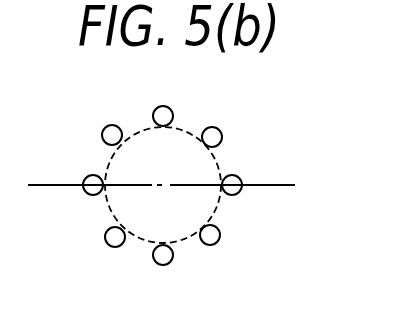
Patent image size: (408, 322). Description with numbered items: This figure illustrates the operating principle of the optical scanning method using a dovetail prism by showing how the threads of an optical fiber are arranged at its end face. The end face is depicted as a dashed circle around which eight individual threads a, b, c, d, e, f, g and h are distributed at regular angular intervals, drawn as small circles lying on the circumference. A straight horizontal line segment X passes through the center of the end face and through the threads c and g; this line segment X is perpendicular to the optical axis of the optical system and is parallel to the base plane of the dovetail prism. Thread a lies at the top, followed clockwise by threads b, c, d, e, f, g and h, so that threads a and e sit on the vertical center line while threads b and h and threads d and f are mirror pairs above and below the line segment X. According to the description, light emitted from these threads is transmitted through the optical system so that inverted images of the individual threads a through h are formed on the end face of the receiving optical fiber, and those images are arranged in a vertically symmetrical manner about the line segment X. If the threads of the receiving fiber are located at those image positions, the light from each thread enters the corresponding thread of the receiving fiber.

The thread a is at (166, 106).
The thread b is at (214, 127).
The thread c is at (242, 182).
The thread d is at (220, 237).
The thread e is at (166, 265).
The thread f is at (106, 244).
The thread g is at (85, 191).
The thread h is at (102, 134).
The line segment X is at (283, 183).